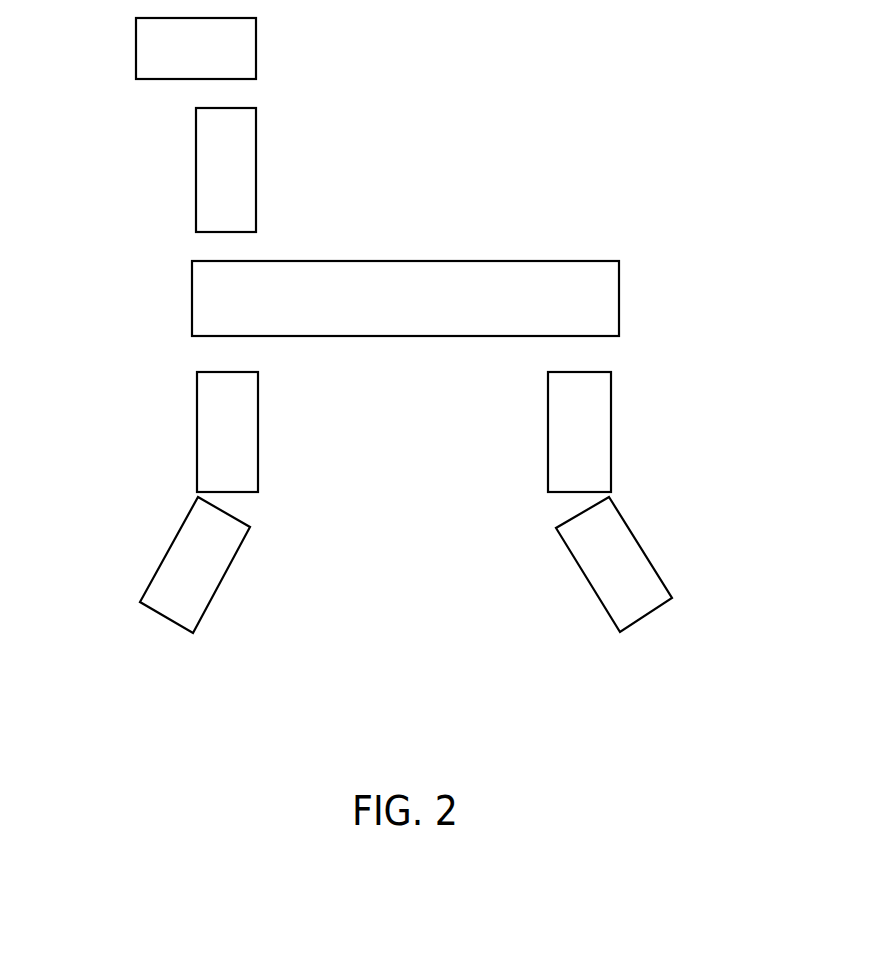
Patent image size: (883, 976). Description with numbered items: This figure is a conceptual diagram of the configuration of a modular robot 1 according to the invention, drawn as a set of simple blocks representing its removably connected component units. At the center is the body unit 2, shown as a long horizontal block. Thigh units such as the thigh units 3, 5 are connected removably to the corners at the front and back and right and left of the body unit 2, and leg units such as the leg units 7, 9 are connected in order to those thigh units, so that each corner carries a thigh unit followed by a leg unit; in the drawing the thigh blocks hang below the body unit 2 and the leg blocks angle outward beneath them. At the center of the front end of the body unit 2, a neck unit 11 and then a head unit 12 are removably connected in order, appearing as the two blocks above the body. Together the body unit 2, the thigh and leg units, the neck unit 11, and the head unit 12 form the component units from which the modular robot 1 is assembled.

The modular robot 1 is at (874, 653).
The body unit 2 is at (619, 297).
The thigh unit 3 is at (258, 411).
The thigh unit 5 is at (609, 401).
The leg unit 7 is at (230, 566).
The leg unit 9 is at (637, 541).
The neck unit 11 is at (256, 160).
The head unit 12 is at (256, 44).